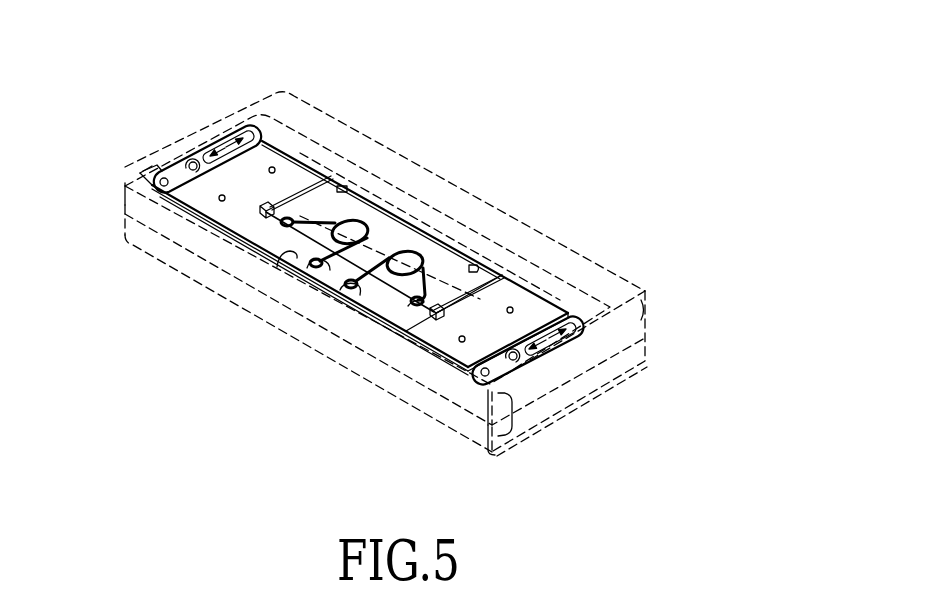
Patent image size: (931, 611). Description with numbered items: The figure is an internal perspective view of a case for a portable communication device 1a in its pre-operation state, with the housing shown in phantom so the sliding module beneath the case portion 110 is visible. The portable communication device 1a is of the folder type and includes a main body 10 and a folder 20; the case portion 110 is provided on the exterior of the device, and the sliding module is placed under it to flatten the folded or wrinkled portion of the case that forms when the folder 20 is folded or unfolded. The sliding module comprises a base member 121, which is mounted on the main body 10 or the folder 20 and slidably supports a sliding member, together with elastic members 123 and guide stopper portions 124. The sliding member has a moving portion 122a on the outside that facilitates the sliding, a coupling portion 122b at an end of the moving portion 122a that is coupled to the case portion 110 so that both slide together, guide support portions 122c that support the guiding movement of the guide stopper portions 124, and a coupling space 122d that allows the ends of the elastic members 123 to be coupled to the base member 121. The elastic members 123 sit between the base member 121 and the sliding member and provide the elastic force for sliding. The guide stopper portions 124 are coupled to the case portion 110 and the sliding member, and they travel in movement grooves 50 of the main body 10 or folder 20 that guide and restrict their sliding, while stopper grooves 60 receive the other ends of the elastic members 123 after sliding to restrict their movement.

The portable communication device 1a is at (727, 268).
The main body 10 is at (646, 357).
The folder 20 is at (335, 125).
The movement grooves 50 is at (223, 147).
The stopper grooves 60 is at (343, 186).
The case portion 110 is at (302, 338).
The base member 121 is at (533, 308).
The moving portion 122a is at (470, 242).
The coupling portion 122b is at (157, 167).
The guide support portions 122c is at (260, 212).
The coupling space 122d is at (272, 260).
The elastic members 123 is at (420, 256).
The guide stopper portions 124 is at (181, 170).